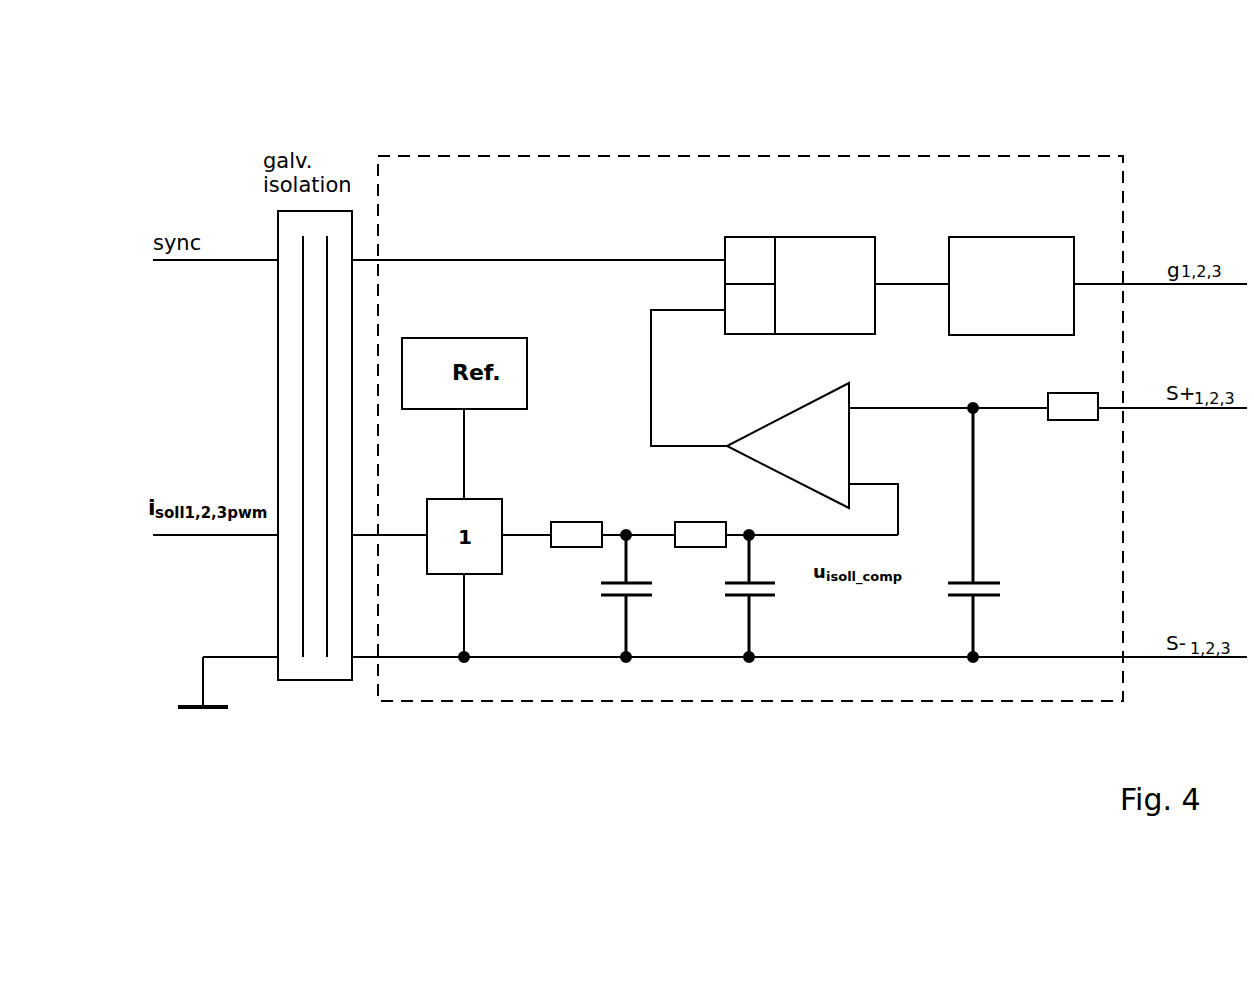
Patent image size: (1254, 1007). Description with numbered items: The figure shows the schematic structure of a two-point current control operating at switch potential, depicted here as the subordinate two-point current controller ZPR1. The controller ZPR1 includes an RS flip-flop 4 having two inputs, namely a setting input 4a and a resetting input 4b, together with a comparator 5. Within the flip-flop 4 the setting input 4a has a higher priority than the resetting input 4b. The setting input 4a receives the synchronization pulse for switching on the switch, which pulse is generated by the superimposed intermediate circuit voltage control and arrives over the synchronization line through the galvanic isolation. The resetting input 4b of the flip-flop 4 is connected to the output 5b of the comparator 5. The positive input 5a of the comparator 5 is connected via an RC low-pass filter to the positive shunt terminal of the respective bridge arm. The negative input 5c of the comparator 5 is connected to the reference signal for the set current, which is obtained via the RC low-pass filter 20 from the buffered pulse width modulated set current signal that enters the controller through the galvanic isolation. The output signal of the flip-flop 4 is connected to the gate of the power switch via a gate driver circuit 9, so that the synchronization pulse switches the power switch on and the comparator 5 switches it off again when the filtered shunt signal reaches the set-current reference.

The two-point current controller ZPR1 is at (683, 125).
The RS flip-flop 4 is at (820, 254).
The setting input 4a is at (722, 258).
The resetting input 4b is at (722, 311).
The comparator 5 is at (832, 444).
The positive input 5a is at (851, 407).
The output 5b is at (727, 445).
The negative input 5c is at (851, 487).
The gate driver circuit 9 is at (1028, 250).
The RC low-pass filter 20 is at (778, 663).